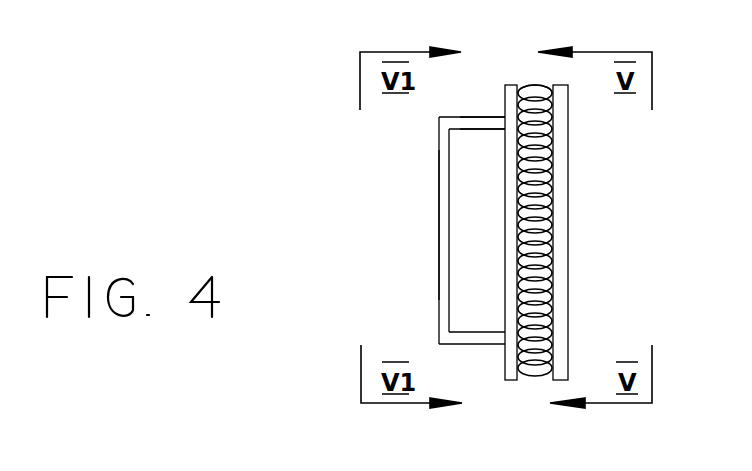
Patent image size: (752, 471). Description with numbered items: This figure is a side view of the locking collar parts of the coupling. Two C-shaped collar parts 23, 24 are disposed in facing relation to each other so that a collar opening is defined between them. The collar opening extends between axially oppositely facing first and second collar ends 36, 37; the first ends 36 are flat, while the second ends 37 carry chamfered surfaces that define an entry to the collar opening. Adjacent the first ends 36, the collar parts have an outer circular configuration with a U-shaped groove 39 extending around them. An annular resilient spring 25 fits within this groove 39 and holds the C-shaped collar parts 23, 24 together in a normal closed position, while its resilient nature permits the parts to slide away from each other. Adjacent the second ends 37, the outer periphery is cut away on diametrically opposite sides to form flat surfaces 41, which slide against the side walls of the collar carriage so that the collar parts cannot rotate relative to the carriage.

The C-shaped collar part 23 is at (460, 124).
The C-shaped collar part 24 is at (446, 230).
The annular resilient spring 25 is at (545, 128).
The first collar end 36 is at (570, 268).
The second collar end 37 is at (438, 211).
The U-shaped groove 39 is at (548, 88).
The flat surface 41 is at (462, 372).